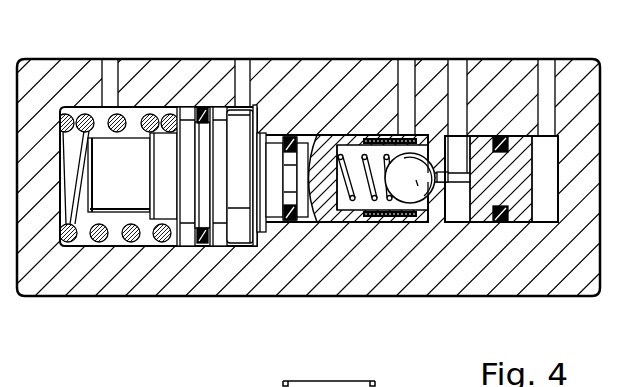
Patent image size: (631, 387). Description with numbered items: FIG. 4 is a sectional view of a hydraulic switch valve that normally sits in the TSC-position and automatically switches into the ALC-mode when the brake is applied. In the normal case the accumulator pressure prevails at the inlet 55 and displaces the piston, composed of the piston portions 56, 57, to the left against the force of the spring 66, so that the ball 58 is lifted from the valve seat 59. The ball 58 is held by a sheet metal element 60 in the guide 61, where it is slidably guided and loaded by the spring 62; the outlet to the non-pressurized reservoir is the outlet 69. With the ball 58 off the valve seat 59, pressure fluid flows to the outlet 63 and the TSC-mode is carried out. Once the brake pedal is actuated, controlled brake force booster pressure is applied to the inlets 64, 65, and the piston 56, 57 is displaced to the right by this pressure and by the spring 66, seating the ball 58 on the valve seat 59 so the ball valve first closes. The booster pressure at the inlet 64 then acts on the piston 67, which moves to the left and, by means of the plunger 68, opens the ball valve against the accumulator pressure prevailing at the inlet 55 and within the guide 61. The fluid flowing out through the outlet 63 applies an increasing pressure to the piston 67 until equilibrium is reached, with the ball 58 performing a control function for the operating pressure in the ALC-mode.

The inlet 55 is at (405, 67).
The piston portion 56 is at (306, 208).
The piston portion 57 is at (183, 246).
The ball 58 is at (400, 196).
The valve seat 59 is at (430, 200).
The sheet metal element 60 is at (428, 197).
The guide 61 is at (375, 137).
The spring 62 is at (341, 157).
The outlet 63 is at (457, 70).
The inlet 64 is at (547, 67).
The inlet 65 is at (110, 67).
The spring 66 is at (97, 243).
The piston 67 is at (517, 200).
The plunger 68 is at (452, 173).
The outlet 69 is at (243, 68).